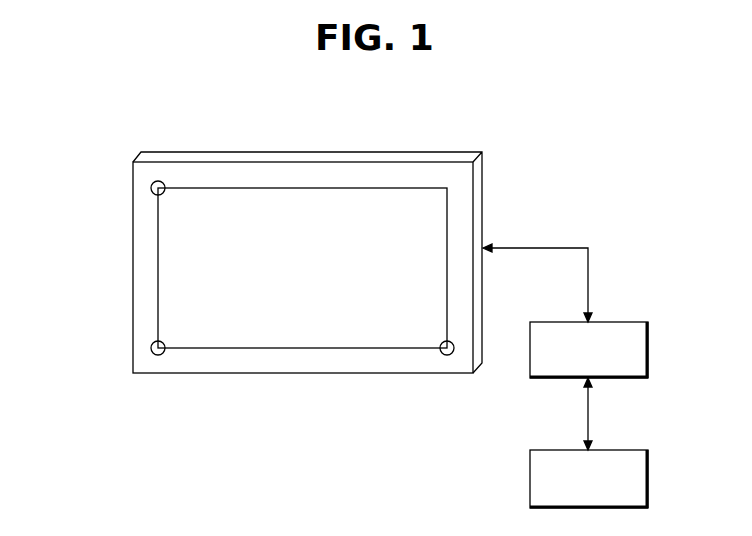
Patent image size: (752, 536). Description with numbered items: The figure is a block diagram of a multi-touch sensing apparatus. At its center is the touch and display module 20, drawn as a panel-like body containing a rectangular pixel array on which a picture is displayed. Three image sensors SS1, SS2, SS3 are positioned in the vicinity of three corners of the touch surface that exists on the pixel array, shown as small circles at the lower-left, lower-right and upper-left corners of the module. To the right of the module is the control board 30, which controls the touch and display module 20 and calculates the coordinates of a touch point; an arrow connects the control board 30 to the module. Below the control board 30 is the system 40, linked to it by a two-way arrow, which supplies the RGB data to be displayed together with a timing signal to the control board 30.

The touch and display module 20 is at (311, 281).
The control board 30 is at (601, 361).
The system 40 is at (601, 490).
The image sensor SS1 is at (152, 352).
The image sensor SS2 is at (453, 353).
The image sensor SS3 is at (151, 185).